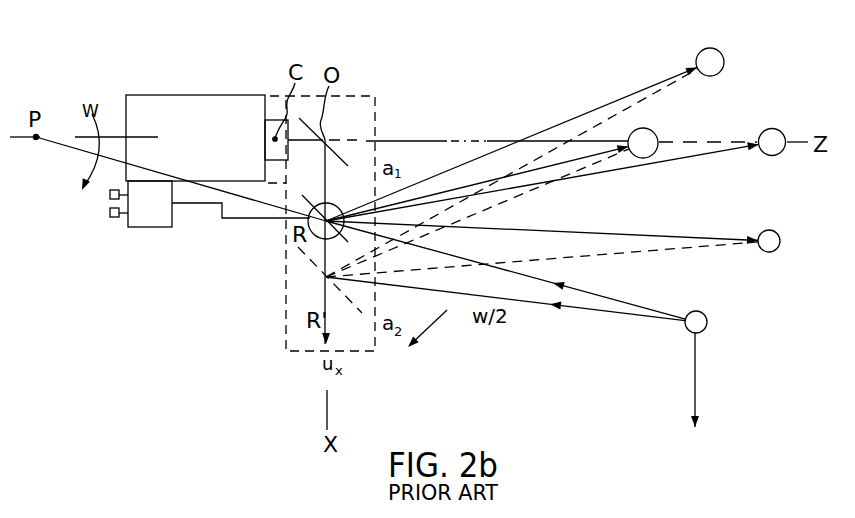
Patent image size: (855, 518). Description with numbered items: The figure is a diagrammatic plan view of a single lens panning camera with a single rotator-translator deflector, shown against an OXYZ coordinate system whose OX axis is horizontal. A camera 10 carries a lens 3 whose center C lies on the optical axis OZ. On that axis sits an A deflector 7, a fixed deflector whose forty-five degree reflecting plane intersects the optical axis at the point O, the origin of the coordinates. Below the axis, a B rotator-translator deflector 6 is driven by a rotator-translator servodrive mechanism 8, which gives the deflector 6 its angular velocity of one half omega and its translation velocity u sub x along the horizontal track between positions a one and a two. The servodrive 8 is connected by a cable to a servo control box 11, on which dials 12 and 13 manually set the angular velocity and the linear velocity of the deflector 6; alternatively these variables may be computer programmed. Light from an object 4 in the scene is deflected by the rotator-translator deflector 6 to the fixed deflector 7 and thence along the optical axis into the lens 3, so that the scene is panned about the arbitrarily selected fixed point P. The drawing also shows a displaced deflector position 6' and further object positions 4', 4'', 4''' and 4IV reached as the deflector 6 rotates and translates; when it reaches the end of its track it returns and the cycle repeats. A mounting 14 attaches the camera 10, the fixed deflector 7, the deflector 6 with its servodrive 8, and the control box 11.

The camera 10 is at (204, 149).
The servo control box 11 is at (156, 213).
The dial 12 is at (110, 195).
The dial 13 is at (110, 213).
The mounting 14 is at (227, 219).
The lens 3 is at (283, 160).
The rotator-translator deflector 6 is at (181, 192).
The mirror-image beam path 6' is at (310, 290).
The fixed deflector 7 is at (343, 132).
The rotator-translator servodrive mechanism 8 is at (322, 204).
The object 4 is at (703, 360).
The image point 4' is at (781, 232).
The image point 4'' is at (782, 129).
The image point 4''' is at (657, 135).
The image point 4IV is at (722, 62).